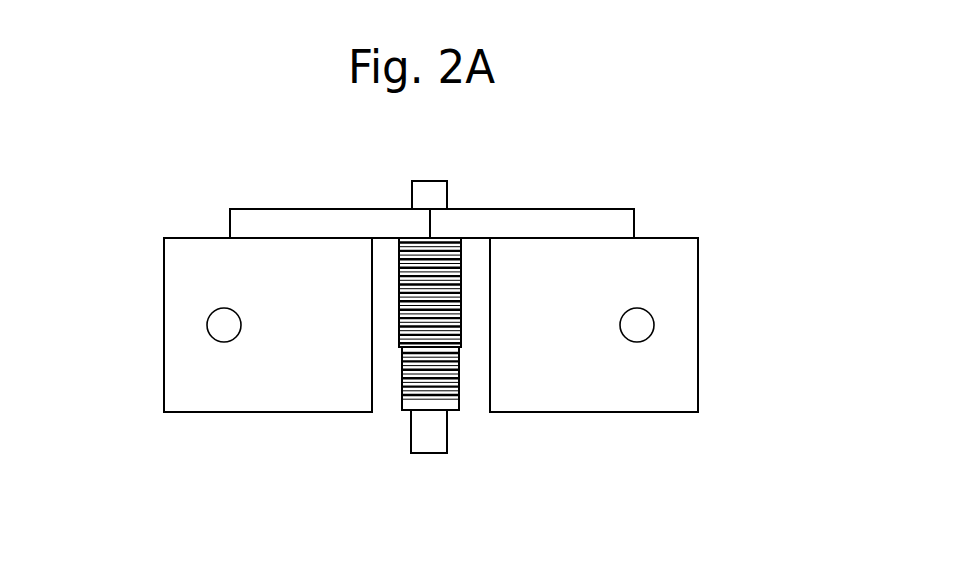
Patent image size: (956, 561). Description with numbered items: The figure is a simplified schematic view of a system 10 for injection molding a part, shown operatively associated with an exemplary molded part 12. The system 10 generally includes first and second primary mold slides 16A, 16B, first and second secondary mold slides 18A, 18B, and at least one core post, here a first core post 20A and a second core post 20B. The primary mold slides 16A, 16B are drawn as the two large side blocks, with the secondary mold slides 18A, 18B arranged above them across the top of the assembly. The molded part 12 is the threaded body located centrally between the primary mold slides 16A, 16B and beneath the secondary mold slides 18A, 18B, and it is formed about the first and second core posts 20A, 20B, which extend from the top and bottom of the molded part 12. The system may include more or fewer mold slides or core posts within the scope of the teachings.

The system for injection molding a part 10 is at (750, 220).
The molded part 12 is at (462, 414).
The first primary mold slide 16A is at (178, 395).
The second primary mold slide 16B is at (678, 395).
The first secondary mold slide 18A is at (280, 223).
The second secondary mold slide 18B is at (578, 223).
The first core post 20A is at (422, 438).
The second core post 20B is at (428, 195).